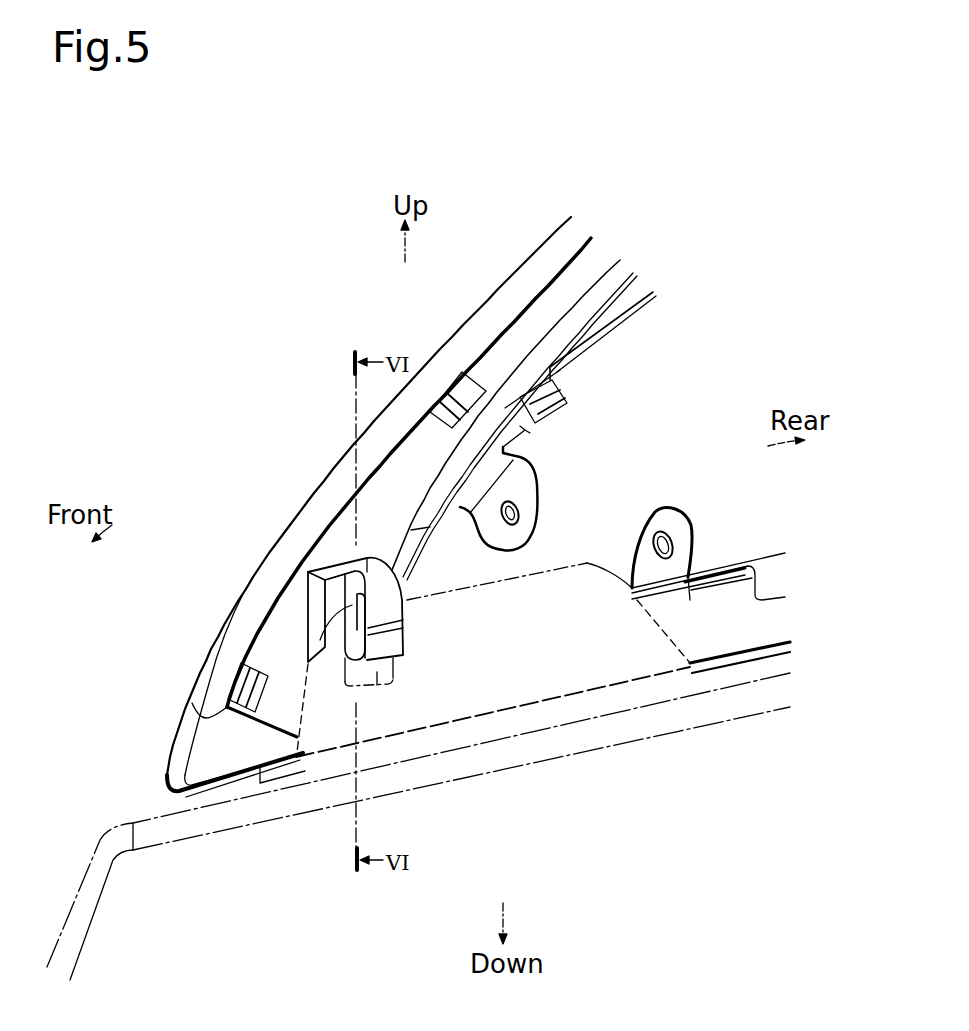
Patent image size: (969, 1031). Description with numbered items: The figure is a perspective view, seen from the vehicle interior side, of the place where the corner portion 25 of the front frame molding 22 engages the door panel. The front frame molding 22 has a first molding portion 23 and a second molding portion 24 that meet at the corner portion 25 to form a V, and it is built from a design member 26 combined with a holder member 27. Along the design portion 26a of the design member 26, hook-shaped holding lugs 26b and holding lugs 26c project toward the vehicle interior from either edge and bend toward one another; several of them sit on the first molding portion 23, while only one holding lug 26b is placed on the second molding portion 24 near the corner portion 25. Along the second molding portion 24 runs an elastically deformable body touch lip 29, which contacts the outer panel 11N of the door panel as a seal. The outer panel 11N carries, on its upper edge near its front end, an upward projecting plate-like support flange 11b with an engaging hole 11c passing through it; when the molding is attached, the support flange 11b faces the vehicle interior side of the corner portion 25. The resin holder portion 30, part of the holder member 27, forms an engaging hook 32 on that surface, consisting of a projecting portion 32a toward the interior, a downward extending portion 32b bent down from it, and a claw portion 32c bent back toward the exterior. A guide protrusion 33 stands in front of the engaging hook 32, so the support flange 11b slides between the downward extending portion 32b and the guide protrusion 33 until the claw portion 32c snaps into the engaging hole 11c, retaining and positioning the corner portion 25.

The outer panel 11N is at (187, 833).
The support flange 11b is at (556, 590).
The engaging hole 11c is at (377, 686).
The front frame molding 22 is at (266, 372).
The first molding portion 23 is at (547, 228).
The second molding portion 24 is at (781, 553).
The corner portion 25 is at (148, 758).
The design member 26 is at (197, 703).
The design portion 26a is at (703, 613).
The holding lugs 26b is at (482, 388).
The holding lugs 26c is at (565, 400).
The holder member 27 is at (267, 642).
The resin holder portion 30 is at (153, 581).
The body touch lip 29 is at (735, 660).
The engaging hook 32 is at (404, 652).
The projecting portion 32a is at (363, 566).
The downward extending portion 32b is at (410, 620).
The claw portion 32c is at (305, 650).
The guide protrusion 33 is at (322, 632).